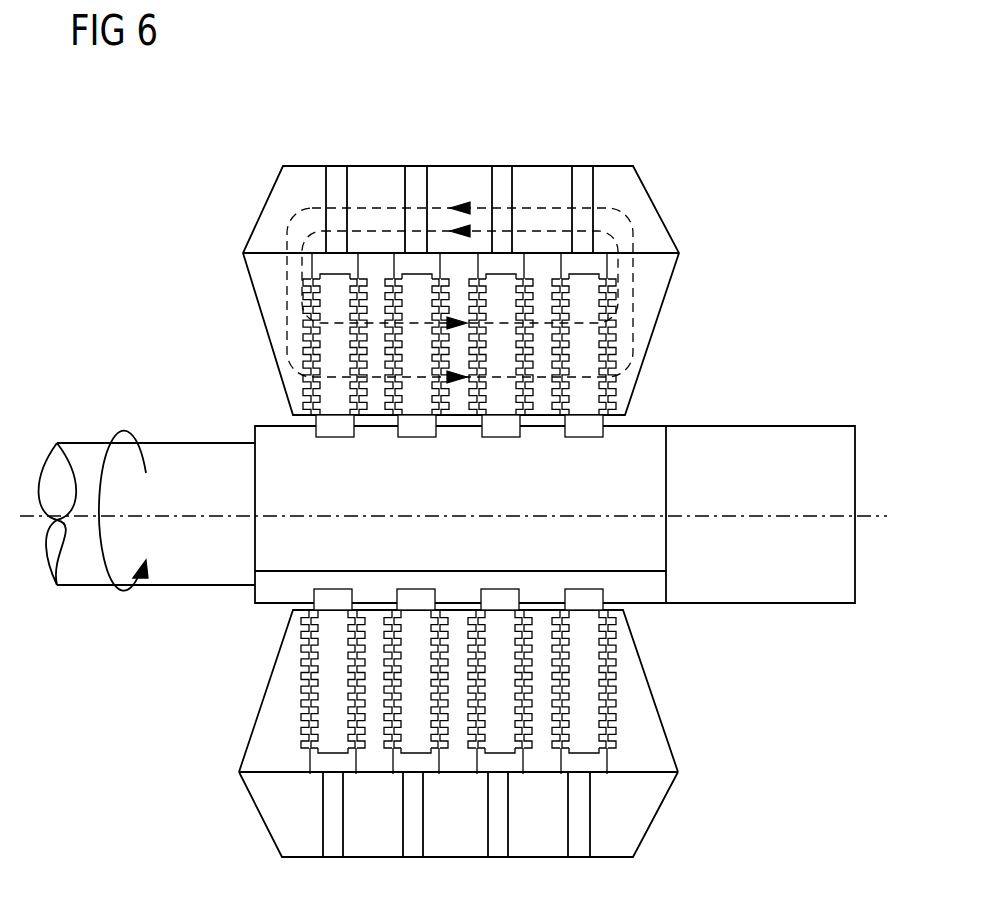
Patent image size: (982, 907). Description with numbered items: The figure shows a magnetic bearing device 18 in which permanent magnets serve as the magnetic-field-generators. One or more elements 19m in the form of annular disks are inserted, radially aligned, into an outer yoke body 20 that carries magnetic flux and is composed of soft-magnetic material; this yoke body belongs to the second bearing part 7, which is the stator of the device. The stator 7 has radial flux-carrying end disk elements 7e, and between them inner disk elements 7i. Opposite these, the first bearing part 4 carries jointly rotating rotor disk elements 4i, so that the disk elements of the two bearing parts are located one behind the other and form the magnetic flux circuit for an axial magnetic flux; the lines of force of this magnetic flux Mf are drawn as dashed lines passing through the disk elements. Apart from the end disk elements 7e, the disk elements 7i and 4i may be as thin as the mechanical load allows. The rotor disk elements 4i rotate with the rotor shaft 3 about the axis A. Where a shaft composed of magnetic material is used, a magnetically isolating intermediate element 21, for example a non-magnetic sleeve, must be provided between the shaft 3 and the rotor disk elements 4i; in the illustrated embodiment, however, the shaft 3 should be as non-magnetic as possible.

The rotor shaft 3 is at (58, 556).
The first bearing part 4 is at (465, 651).
The rotor disk elements 4i is at (580, 603).
The second bearing part 7 is at (461, 297).
The disk elements 7i is at (537, 401).
The end disk elements 7e is at (265, 710).
The magnetic bearing device 18 is at (796, 724).
The elements in the form of annular disks 19m is at (418, 178).
The outer yoke body 20 is at (268, 815).
The magnetically isolating intermediate element 21 is at (256, 592).
The rotation axis A is at (885, 516).
The magnetic flux Mf is at (633, 342).